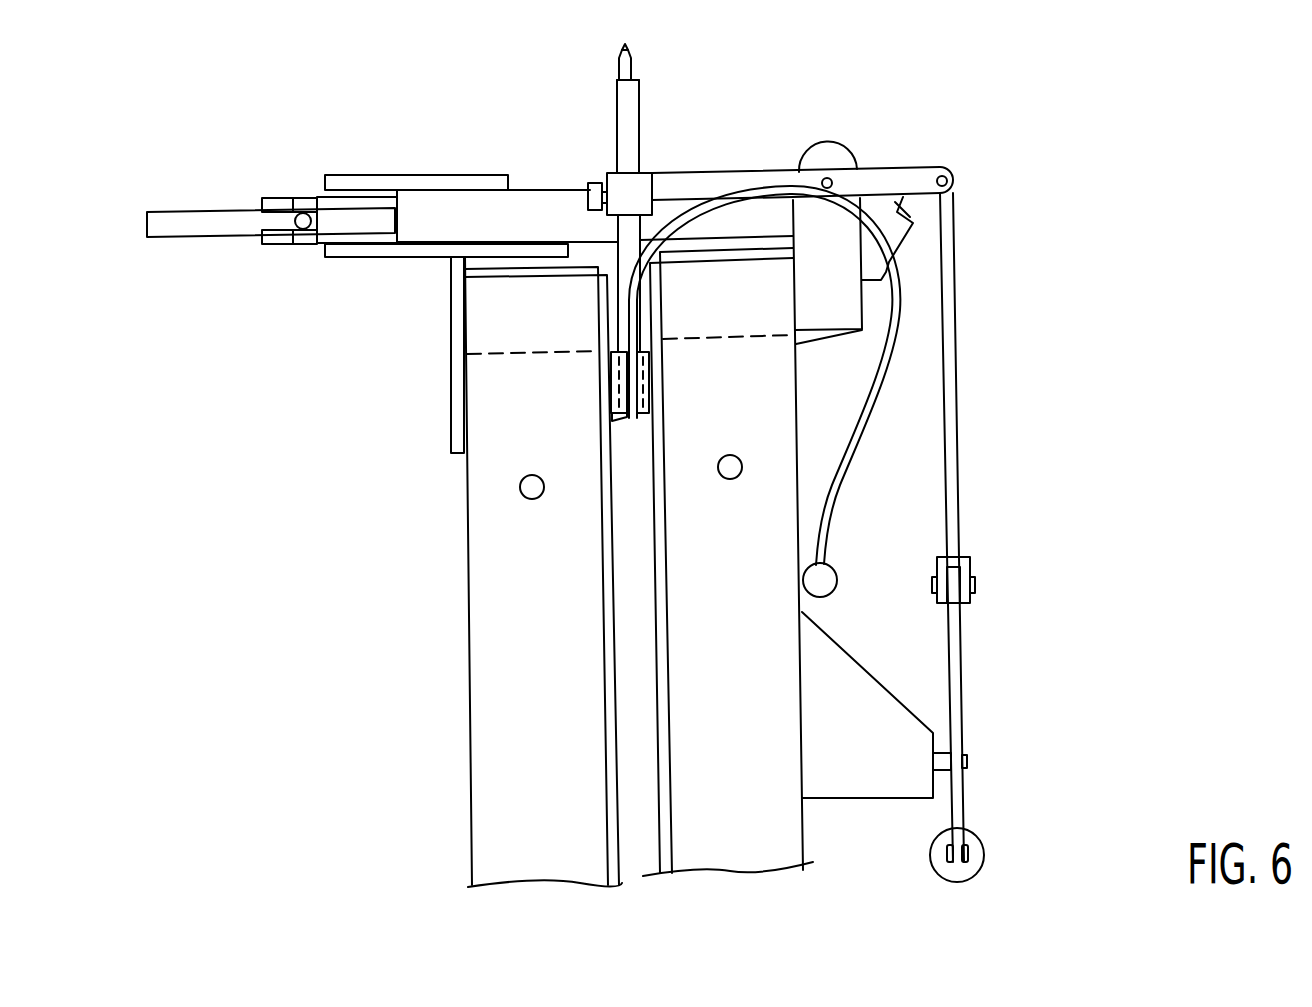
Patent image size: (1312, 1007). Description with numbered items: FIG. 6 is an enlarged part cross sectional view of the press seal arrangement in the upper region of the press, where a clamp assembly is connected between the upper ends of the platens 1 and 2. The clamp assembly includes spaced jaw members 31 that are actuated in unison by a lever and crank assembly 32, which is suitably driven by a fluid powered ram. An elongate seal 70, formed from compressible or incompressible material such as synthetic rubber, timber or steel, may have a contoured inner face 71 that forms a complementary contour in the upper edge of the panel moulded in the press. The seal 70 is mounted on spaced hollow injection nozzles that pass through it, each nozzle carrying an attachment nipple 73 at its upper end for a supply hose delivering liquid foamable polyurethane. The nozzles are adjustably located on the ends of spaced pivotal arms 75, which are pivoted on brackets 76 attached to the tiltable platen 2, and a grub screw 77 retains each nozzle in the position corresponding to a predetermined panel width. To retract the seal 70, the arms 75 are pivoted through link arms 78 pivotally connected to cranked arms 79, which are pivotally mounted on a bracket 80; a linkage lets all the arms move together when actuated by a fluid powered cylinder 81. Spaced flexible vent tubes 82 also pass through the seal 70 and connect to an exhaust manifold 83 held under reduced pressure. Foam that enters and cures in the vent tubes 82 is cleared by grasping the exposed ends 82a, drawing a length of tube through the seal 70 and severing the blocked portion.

The platen 1 is at (542, 779).
The tiltable platen 2 is at (753, 776).
The jaw member 31 is at (915, 197).
The lever and crank assembly 32 is at (272, 198).
The elongate seal 70 is at (632, 142).
The contoured inner face 71 is at (622, 418).
The attachment nipple 73 is at (632, 69).
The pivotal arm 75 is at (762, 177).
The bracket 76 is at (847, 267).
The grub screw 77 is at (586, 191).
The link arm 78 is at (953, 388).
The cranked arm 79 is at (955, 643).
The bracket 80 is at (902, 725).
The fluid powered cylinder 81 is at (988, 855).
The flexible vent tube 82 is at (902, 337).
The exposed end of vent tube 82a is at (640, 415).
The exhaust manifold 83 is at (833, 582).